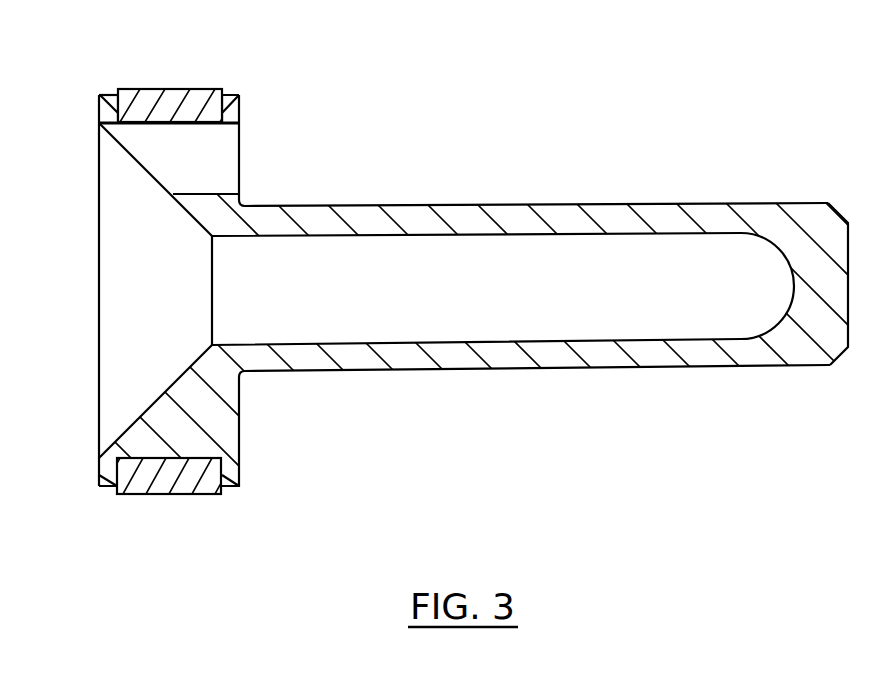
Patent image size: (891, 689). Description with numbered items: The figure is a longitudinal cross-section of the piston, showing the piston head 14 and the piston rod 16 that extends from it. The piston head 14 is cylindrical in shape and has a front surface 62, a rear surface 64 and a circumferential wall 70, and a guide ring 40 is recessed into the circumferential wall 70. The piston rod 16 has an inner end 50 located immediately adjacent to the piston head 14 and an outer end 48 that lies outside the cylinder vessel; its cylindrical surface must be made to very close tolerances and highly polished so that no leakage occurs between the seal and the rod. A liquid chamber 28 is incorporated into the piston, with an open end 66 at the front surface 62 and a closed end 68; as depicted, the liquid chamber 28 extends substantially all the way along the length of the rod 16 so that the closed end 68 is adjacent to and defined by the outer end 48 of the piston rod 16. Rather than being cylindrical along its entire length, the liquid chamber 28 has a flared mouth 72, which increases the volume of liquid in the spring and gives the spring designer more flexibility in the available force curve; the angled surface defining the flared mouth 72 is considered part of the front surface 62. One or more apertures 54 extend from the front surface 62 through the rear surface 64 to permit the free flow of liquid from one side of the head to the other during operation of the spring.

The piston head 14 is at (226, 441).
The piston rod 16 is at (660, 217).
The liquid chamber 28 is at (368, 252).
The guide ring 40 is at (174, 98).
The outer end 48 is at (827, 226).
The inner end 50 is at (291, 357).
The apertures 54 is at (203, 157).
The front surface 62 is at (98, 110).
The rear surface 64 is at (240, 107).
The open end 66 is at (98, 241).
The closed end 68 is at (757, 243).
The circumferential wall 70 is at (112, 97).
The flared mouth 72 is at (112, 373).